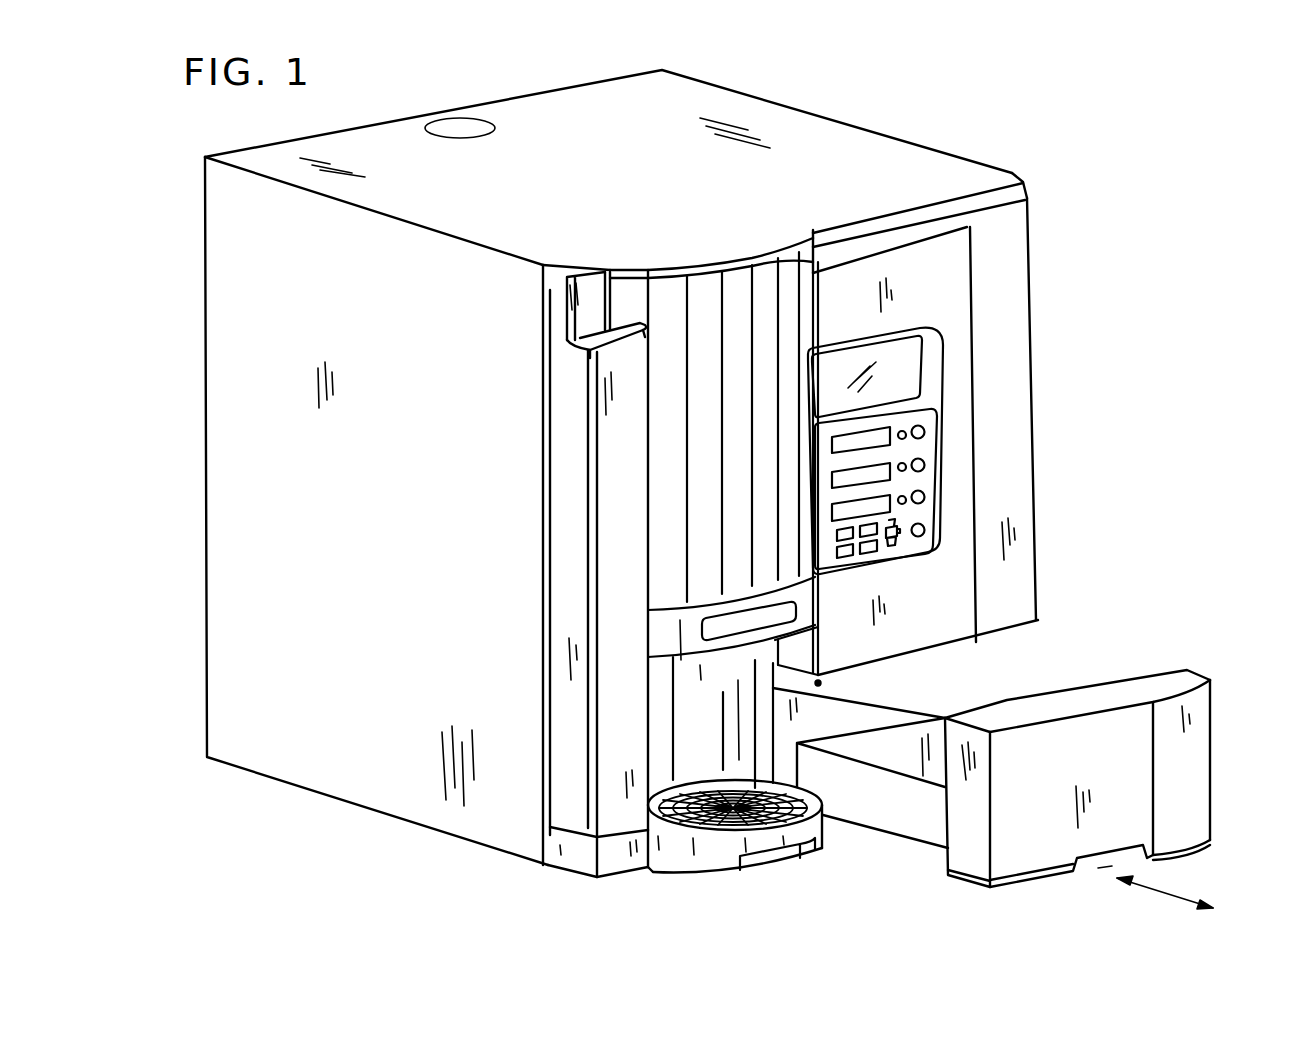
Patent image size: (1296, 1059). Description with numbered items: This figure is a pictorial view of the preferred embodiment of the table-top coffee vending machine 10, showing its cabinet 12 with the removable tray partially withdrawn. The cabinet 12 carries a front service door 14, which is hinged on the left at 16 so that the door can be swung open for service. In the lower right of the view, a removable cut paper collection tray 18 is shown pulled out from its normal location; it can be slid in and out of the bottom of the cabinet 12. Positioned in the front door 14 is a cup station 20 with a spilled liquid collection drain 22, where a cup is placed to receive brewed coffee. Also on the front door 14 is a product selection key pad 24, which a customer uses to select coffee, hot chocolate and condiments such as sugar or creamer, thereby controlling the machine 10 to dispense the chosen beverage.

The table-top coffee vending machine 10 is at (873, 117).
The cabinet 12 is at (384, 780).
The front service door 14 is at (1014, 325).
The hinge 16 is at (542, 802).
The removable cut paper collection tray 18 is at (1028, 789).
The cup station 20 is at (724, 853).
The spilled liquid collection drain 22 is at (822, 830).
The product selection key pad 24 is at (937, 487).